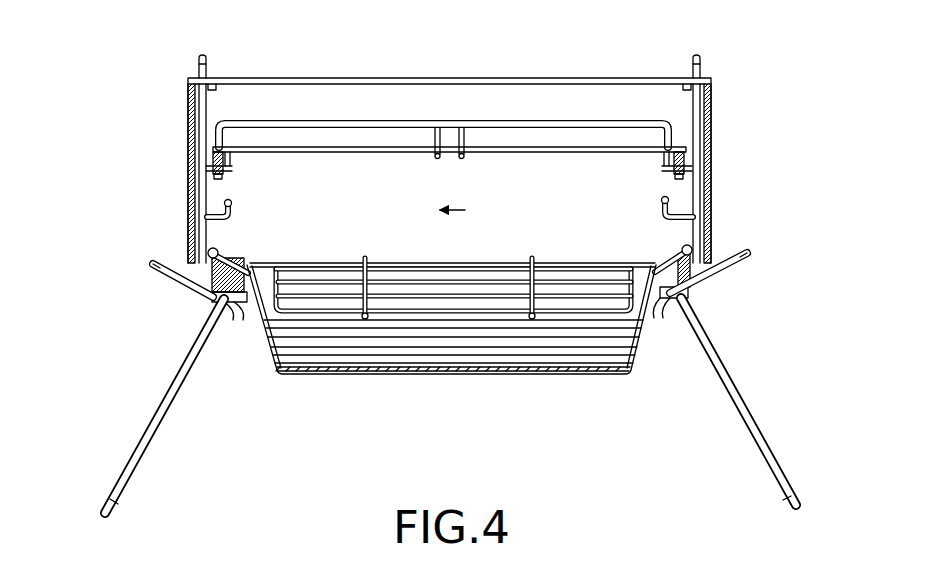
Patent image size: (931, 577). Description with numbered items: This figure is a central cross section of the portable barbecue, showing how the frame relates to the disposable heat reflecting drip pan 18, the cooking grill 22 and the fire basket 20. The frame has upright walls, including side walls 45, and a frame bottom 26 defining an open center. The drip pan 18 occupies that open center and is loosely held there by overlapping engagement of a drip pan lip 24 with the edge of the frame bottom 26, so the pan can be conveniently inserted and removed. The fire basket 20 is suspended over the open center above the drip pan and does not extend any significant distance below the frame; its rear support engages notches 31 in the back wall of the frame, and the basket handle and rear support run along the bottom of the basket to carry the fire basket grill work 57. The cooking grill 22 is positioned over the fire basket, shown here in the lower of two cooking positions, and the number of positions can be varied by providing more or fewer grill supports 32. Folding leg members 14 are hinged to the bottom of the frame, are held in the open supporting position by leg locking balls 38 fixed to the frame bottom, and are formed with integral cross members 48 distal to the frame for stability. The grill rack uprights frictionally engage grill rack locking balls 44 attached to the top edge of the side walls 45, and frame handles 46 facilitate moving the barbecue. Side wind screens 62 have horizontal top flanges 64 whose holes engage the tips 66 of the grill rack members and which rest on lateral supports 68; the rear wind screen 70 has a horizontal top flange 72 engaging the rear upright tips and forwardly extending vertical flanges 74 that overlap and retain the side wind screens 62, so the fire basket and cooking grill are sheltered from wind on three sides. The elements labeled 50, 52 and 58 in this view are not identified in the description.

The folding leg members 14 is at (157, 418).
The disposable heat reflecting drip pan 18 is at (436, 374).
The fire basket 20 is at (457, 256).
The cooking grill 22 is at (378, 144).
The drip pan lip 24 is at (244, 278).
The frame bottom 26 is at (218, 301).
The notches 31 is at (367, 262).
The grill supports 32 is at (231, 210).
The leg locking balls 38 is at (232, 306).
The grill rack locking balls 44 is at (217, 252).
The frame side walls 45 is at (178, 268).
The frame handles 46 is at (172, 284).
The cross members 48 is at (113, 497).
The spit rod 50 is at (508, 121).
The rod bracket 52 is at (216, 166).
The fire basket grill work 57 is at (307, 270).
The hanger hooks 58 is at (459, 129).
The side wind screens 62 is at (189, 130).
The horizontal top flanges 64 is at (211, 83).
The tips 66 is at (197, 66).
The lateral supports 68 is at (213, 89).
The rear wind screen 70 is at (453, 194).
The horizontal top flange 72 is at (300, 78).
The vertical flanges 74 is at (198, 155).